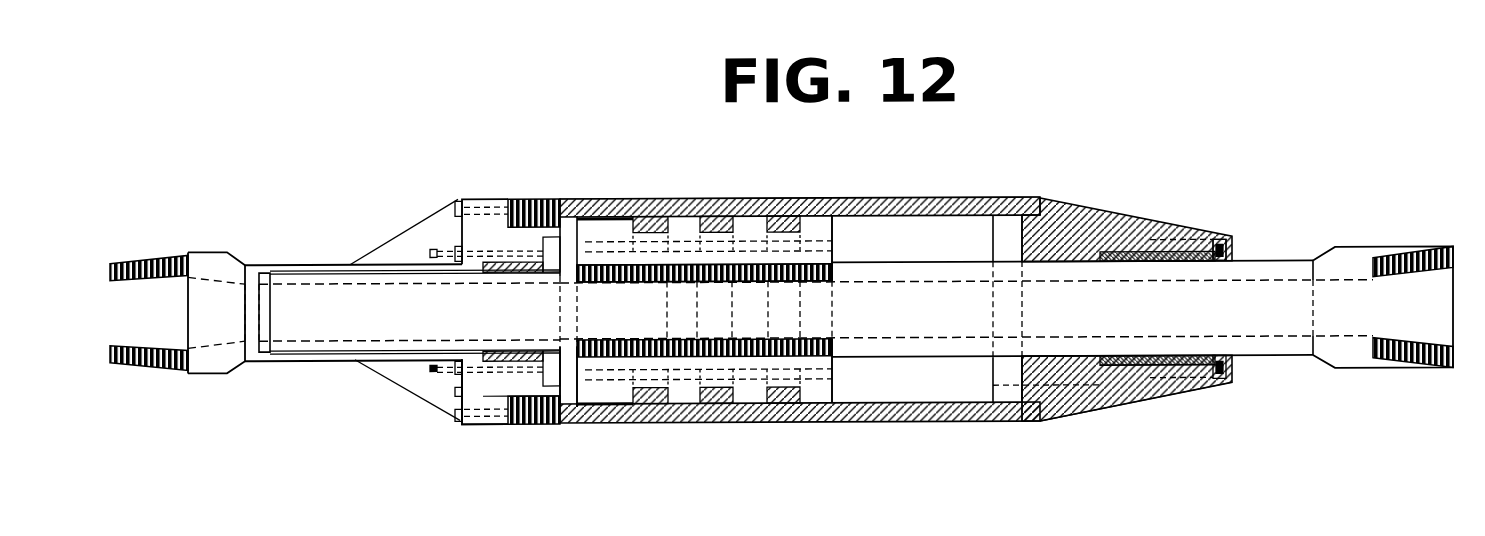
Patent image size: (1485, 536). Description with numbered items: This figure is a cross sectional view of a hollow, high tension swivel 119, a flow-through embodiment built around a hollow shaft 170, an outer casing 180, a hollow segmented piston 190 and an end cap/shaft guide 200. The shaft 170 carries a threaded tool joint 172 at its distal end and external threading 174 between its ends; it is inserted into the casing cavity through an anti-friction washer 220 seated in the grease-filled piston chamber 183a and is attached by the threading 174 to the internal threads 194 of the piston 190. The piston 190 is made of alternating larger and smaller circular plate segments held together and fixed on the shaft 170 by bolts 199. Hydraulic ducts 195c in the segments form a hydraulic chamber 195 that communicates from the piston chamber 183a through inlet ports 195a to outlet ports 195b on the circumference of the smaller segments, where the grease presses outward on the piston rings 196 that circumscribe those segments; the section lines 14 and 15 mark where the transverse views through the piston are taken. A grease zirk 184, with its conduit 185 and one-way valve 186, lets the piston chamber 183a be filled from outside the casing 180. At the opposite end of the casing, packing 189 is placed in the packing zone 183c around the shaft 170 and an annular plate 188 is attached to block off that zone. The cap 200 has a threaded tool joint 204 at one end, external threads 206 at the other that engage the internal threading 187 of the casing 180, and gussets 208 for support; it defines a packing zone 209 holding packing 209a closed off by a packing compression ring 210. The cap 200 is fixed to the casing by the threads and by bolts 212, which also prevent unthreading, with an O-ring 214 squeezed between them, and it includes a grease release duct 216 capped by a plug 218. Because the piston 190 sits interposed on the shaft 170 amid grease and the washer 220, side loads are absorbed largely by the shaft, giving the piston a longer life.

The hollow, high tension swivel 119 is at (1030, 145).
The hollow shaft 170 is at (1235, 325).
The threaded tool joint 172 is at (1355, 262).
The external threading 174 is at (708, 308).
The internal threads 194 is at (704, 296).
The outer casing 180 is at (1060, 234).
The piston chamber 183a is at (598, 200).
The packing zone 183c is at (1187, 261).
The packing 189 is at (1315, 328).
The grease zirk 184 is at (1100, 402).
The conduit 185 is at (1057, 391).
The one-way valve 186 is at (1102, 414).
The internal threading 187 is at (481, 415).
The annular plate 188 is at (1222, 254).
The hollow segmented piston 190 is at (608, 233).
The hydraulic chamber 195 is at (803, 250).
The inlet ports 195a is at (842, 381).
The outlet ports 195b is at (687, 200).
The hydraulic ducts 195c is at (817, 376).
The piston rings 196 is at (790, 234).
The bolts 199 is at (572, 274).
The end cap/shaft guide 200 is at (458, 200).
The threaded tool joint 204 is at (148, 262).
The external threads 206 is at (535, 421).
The gussets 208 is at (407, 257).
The packing zone 209 is at (483, 272).
The packing 209a is at (381, 332).
The packing compression ring 210 is at (445, 238).
The bolts 212 is at (483, 397).
The O-ring 214 is at (510, 198).
The grease release duct/port 216 is at (455, 417).
The plug 218 is at (455, 394).
The anti-friction washer 220 is at (996, 240).
The section line 14- 14 is at (650, 198).
The section line 15- 15 is at (810, 198).